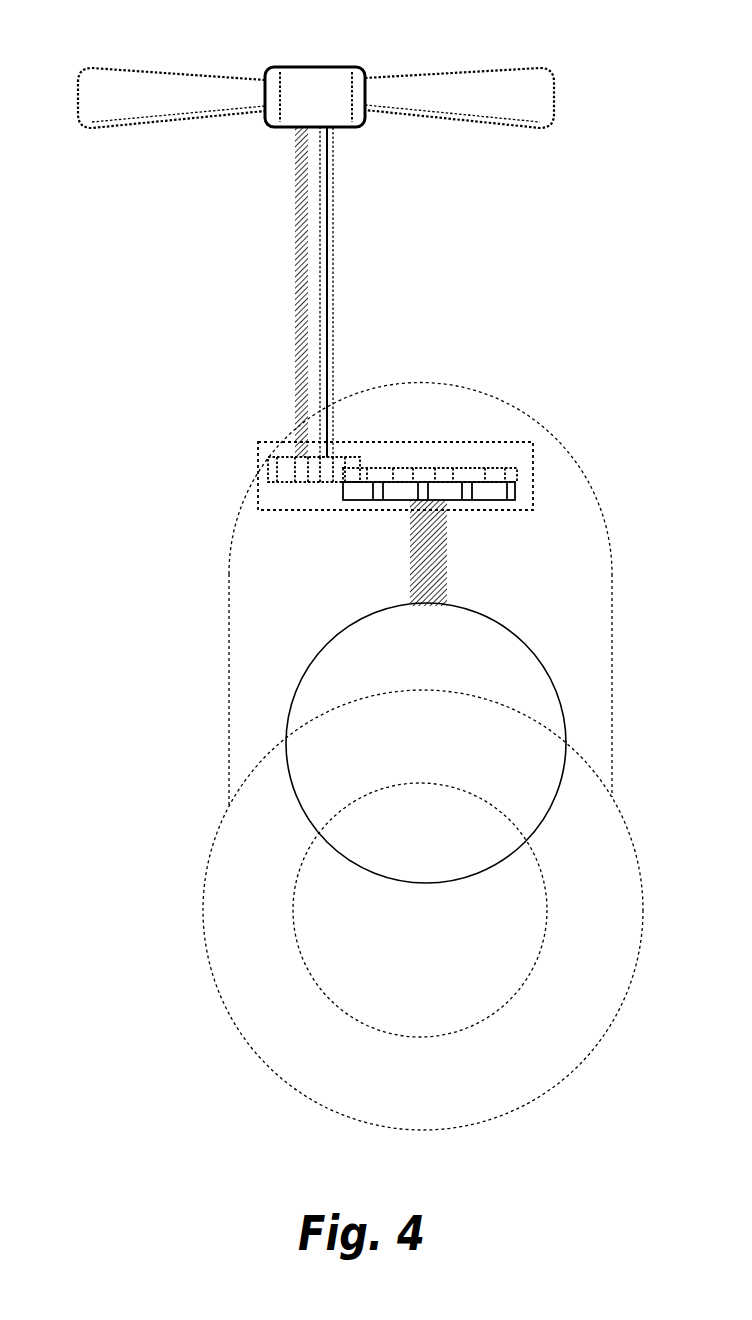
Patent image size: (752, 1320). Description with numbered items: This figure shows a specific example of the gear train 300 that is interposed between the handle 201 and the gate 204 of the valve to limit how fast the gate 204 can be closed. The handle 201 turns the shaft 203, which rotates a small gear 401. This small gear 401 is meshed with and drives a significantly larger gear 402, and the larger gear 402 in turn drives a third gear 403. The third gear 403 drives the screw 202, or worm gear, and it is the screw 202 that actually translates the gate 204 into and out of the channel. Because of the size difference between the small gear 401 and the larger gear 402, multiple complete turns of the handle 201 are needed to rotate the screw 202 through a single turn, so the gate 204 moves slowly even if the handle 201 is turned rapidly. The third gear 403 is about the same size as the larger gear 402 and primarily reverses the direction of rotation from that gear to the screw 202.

The handle 201 is at (144, 87).
The screw 202 is at (447, 545).
The shaft 203 is at (322, 257).
The gate 204 is at (512, 667).
The gear train 300 is at (448, 440).
The small gear 401 is at (285, 470).
The larger gear 402 is at (508, 467).
The third gear 403 is at (477, 489).